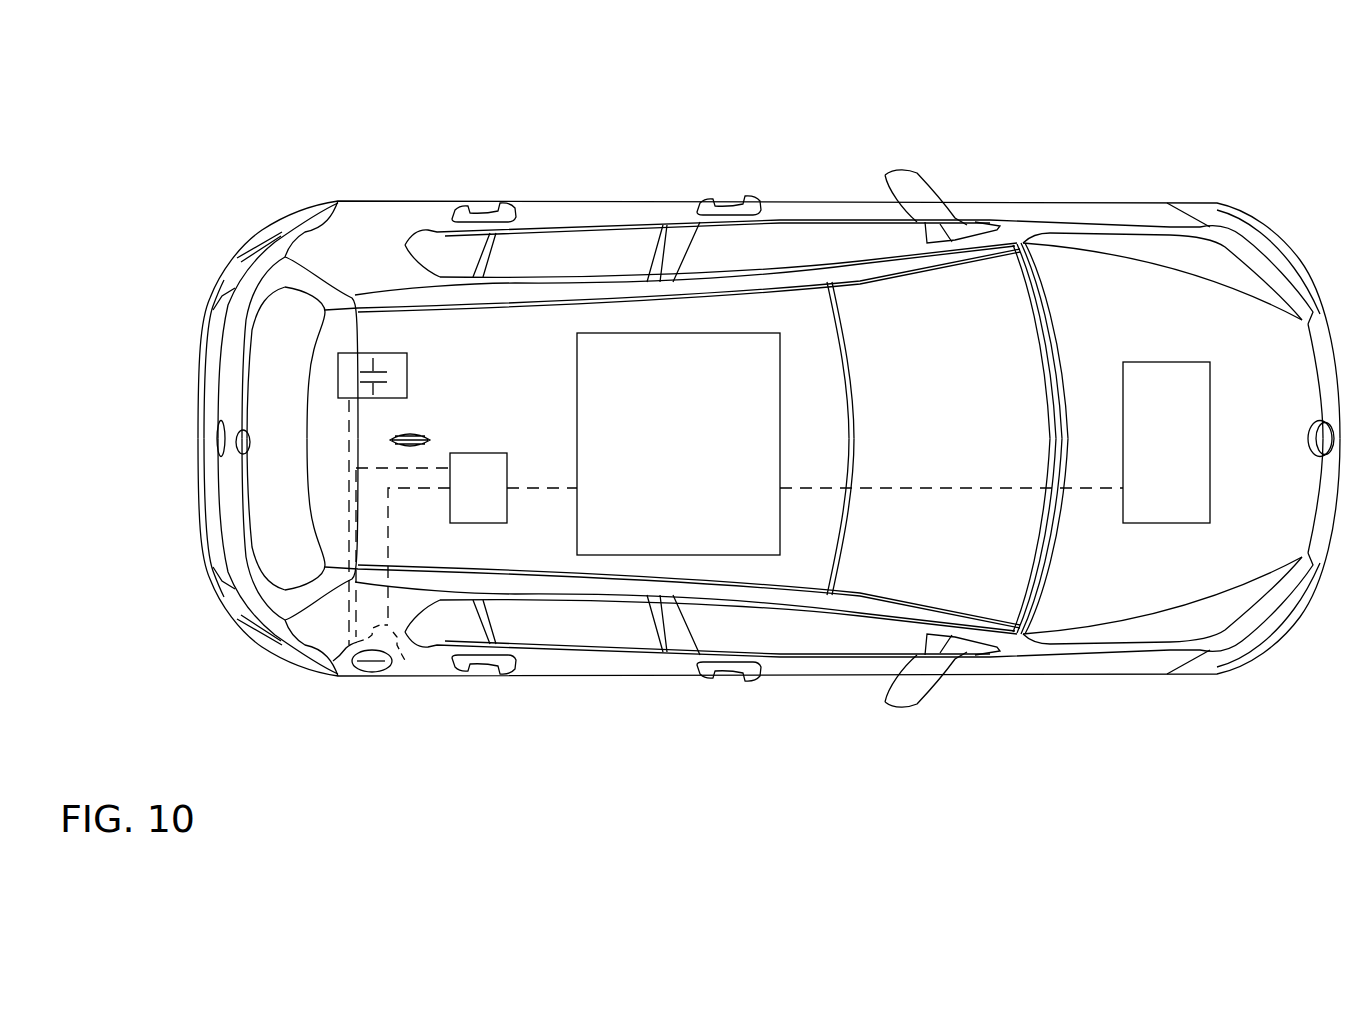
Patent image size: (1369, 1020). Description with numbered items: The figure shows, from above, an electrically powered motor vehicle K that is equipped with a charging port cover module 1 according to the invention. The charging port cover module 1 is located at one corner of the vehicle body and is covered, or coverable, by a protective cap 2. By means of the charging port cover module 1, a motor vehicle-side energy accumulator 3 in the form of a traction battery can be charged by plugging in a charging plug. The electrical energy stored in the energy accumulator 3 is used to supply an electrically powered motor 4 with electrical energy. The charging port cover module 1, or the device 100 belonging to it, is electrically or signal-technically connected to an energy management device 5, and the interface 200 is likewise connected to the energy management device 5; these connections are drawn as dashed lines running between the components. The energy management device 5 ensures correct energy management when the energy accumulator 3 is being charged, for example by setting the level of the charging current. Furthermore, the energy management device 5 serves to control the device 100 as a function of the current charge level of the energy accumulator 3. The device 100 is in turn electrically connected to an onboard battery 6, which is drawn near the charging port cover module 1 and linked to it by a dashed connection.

The motor vehicle K is at (884, 128).
The charging port cover module 1 is at (342, 653).
The protective cap 2 is at (375, 668).
The energy accumulator 3 is at (672, 333).
The electrically powered motor 4 is at (1157, 362).
The energy management device 5 is at (478, 524).
The onboard battery 6 is at (407, 377).
The device 100 is at (353, 643).
The interface 200 is at (393, 632).